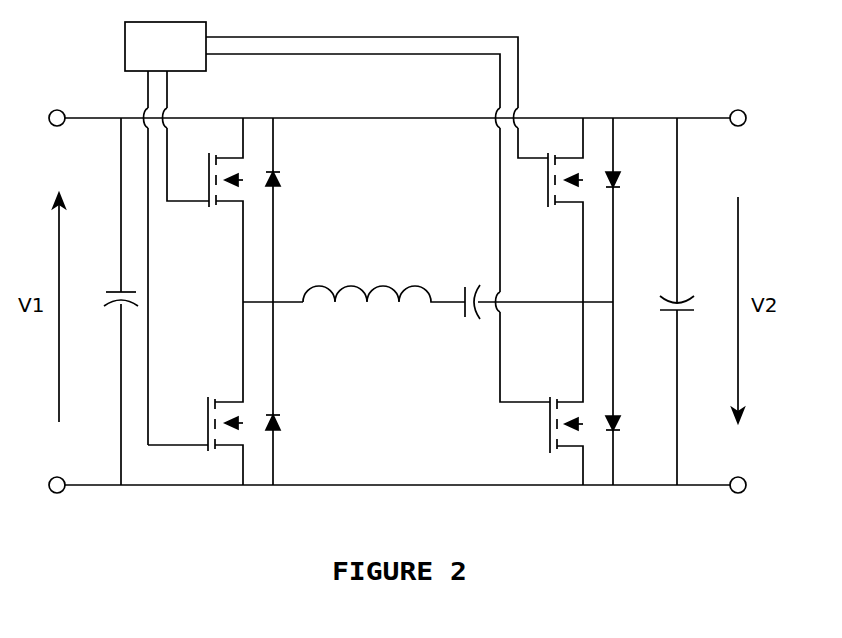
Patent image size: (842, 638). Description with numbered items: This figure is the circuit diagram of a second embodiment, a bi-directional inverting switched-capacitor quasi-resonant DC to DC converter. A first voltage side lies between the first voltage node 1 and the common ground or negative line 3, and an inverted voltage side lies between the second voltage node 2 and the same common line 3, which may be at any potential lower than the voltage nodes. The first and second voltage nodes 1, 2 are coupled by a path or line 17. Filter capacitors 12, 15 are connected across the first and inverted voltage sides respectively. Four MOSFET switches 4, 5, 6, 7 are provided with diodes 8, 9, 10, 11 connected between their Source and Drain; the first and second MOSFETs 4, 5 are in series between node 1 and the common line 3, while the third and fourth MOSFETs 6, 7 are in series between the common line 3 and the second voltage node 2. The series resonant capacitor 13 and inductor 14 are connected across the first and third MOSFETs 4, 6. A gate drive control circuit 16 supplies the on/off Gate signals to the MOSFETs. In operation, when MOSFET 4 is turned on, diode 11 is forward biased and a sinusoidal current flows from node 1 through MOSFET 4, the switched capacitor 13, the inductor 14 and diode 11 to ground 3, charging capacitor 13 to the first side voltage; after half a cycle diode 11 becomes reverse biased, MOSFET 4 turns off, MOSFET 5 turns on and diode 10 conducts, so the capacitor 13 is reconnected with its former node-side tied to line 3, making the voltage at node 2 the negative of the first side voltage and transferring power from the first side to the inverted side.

The first voltage node 1 is at (72, 118).
The second voltage node 2 is at (727, 119).
The common ground or negative line 3 is at (397, 473).
The first MOSFET 4 is at (207, 210).
The second MOSFET 5 is at (205, 393).
The third MOSFET 6 is at (554, 210).
The fourth MOSFET 7 is at (550, 393).
The diode 8 is at (282, 210).
The diode 9 is at (283, 393).
The diode 10 is at (628, 210).
The diode 11 is at (629, 393).
The filter capacitor 12 is at (113, 301).
The series resonant capacitor 13 is at (467, 287).
The inductor 14 is at (384, 279).
The filter capacitor 15 is at (670, 301).
The gate drive control circuit 16 is at (337, 233).
The path or line 17 is at (407, 105).